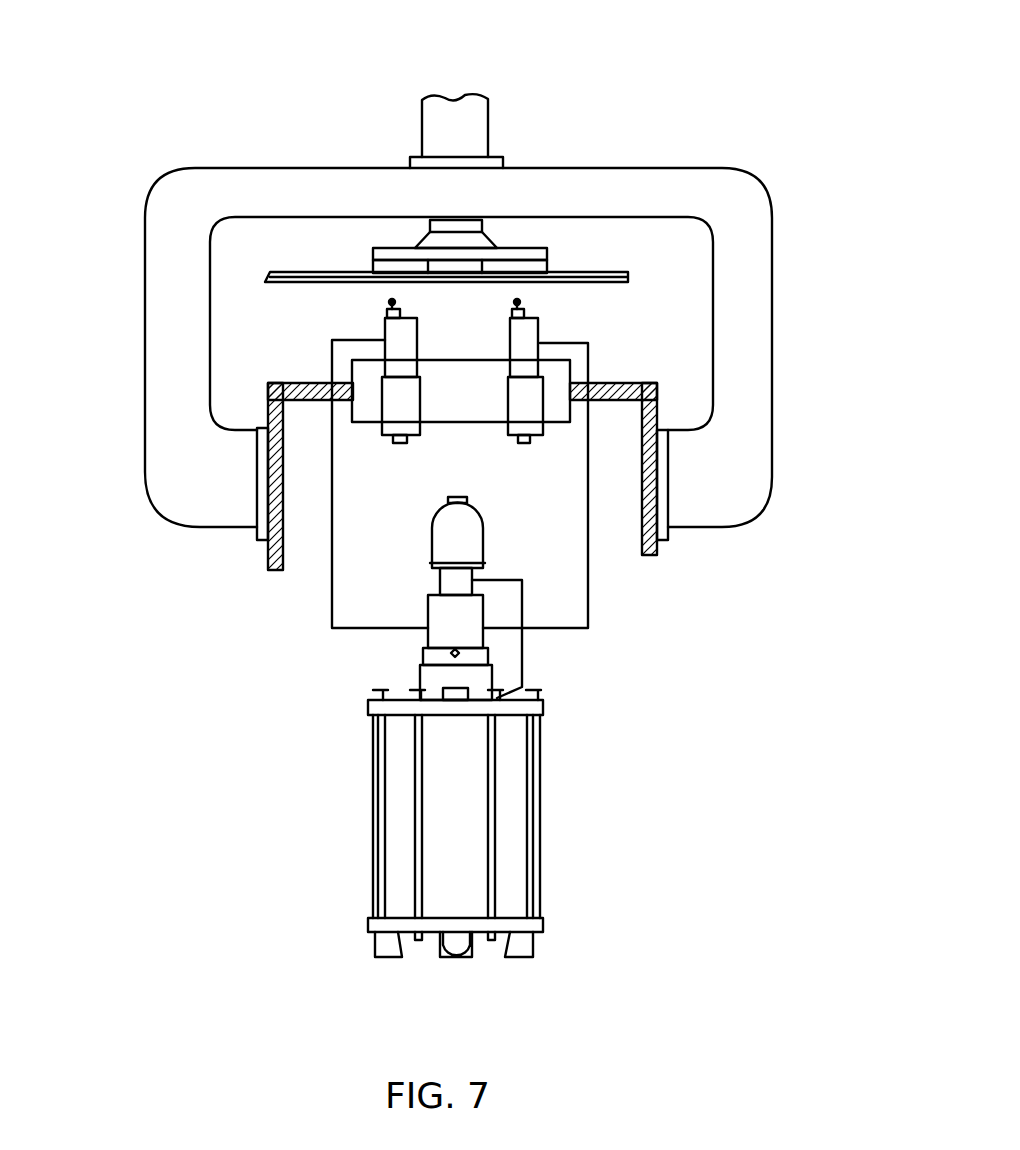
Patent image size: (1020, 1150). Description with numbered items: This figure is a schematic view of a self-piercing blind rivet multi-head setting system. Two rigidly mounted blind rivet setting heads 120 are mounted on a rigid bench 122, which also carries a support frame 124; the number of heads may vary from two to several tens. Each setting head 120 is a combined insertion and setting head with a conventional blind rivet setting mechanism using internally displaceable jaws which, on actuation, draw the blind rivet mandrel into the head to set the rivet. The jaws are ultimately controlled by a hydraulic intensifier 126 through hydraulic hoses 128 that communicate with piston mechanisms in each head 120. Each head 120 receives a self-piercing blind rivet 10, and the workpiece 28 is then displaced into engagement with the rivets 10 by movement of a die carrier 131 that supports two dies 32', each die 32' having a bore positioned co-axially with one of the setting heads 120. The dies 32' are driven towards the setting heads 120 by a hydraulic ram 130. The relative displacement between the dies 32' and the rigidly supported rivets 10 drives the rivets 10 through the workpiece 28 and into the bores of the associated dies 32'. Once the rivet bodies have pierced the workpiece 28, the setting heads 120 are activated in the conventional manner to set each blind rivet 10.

The self-piercing blind rivet 10 is at (388, 302).
The workpiece 28 is at (620, 272).
The die 32' is at (445, 182).
The blind rivet setting head 120 is at (407, 422).
The rigid bench 122 is at (658, 550).
The support frame 124 is at (752, 432).
The hydraulic intensifier 126 is at (437, 823).
The hydraulic hoses 128 is at (332, 630).
The hydraulic ram 130 is at (468, 112).
The die carrier 131 is at (403, 253).